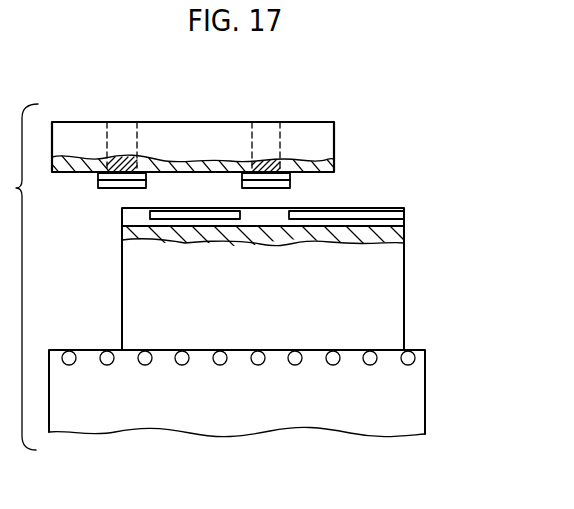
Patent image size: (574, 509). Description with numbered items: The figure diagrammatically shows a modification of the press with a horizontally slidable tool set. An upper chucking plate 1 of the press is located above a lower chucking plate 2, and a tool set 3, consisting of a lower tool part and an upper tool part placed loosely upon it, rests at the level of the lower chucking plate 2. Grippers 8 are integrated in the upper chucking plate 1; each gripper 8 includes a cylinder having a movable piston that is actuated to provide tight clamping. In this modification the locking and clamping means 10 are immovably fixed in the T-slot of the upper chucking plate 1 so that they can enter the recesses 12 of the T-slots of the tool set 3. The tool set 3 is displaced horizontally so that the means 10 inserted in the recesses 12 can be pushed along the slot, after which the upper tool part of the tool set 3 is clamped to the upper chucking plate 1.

The upper chucking plate 1 is at (215, 129).
The lower chucking plate 2 is at (413, 406).
The tool set 3 is at (274, 279).
The gripper 8 is at (106, 136).
The locking and clamping means 10 is at (300, 187).
The recess 12 is at (262, 214).